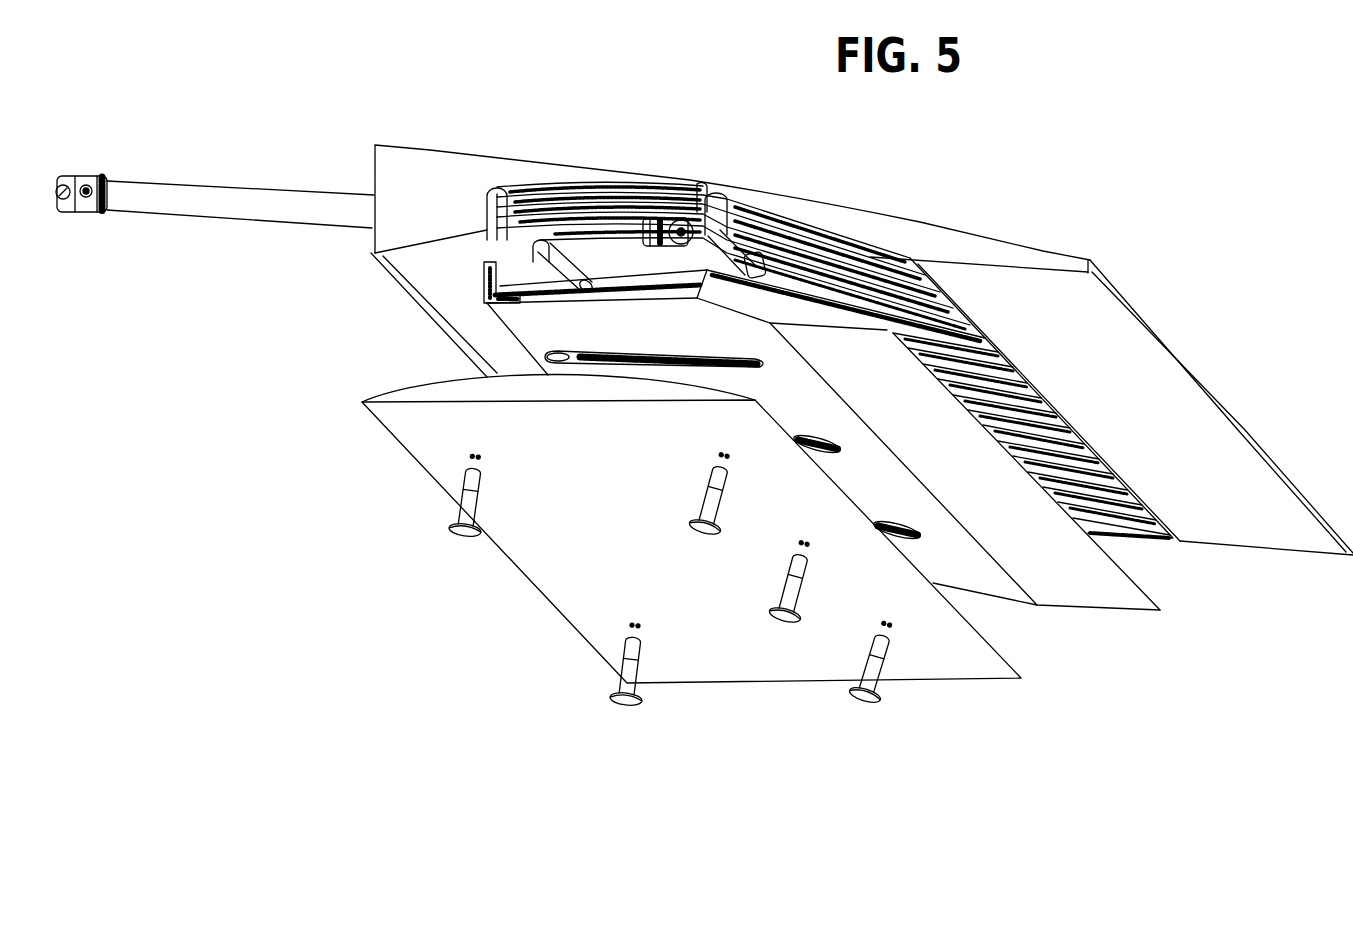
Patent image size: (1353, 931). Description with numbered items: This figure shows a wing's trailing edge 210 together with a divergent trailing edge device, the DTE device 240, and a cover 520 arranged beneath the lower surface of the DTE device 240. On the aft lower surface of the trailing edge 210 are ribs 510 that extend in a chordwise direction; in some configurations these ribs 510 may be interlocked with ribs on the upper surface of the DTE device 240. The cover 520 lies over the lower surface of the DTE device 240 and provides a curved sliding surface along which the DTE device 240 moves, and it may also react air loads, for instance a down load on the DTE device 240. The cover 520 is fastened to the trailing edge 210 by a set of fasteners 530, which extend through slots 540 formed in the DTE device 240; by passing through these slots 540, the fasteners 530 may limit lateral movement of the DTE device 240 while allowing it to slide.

The trailing edge 210 is at (864, 350).
The DTE device 240 is at (765, 415).
The ribs 510 is at (1100, 507).
The cover 520 is at (768, 679).
The fasteners 530 is at (630, 700).
The slots 540 is at (593, 347).